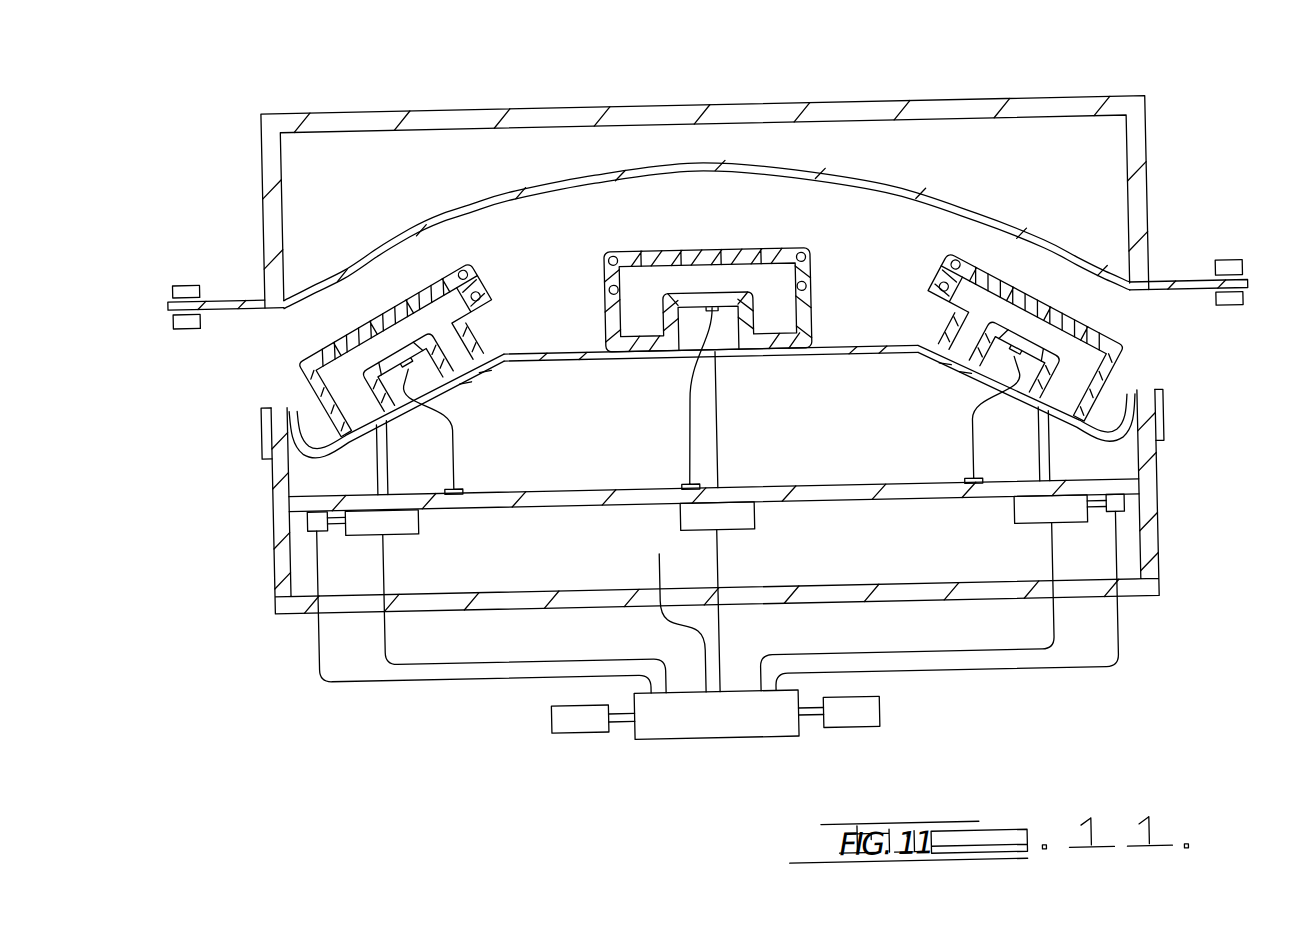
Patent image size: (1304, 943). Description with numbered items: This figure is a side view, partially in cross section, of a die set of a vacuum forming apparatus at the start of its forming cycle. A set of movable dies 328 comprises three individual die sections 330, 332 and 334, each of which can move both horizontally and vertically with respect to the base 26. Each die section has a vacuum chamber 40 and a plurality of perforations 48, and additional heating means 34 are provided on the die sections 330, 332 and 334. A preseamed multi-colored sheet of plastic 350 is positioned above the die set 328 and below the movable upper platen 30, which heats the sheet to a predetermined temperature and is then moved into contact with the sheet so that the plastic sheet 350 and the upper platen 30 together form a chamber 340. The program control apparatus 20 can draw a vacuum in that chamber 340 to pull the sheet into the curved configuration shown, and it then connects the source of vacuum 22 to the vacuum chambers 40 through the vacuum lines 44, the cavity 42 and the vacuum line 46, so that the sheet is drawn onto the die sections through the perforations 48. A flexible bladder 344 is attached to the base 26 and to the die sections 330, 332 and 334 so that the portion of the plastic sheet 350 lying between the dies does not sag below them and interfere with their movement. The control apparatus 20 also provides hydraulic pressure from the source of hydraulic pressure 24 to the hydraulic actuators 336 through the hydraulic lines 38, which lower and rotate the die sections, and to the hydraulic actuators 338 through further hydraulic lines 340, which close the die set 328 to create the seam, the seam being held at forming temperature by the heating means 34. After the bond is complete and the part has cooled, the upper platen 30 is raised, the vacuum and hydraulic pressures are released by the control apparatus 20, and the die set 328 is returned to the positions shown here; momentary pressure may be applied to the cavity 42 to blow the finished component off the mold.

The program control apparatus 20 is at (678, 728).
The source of vacuum 22 is at (866, 726).
The source of hydraulic pressure 24 is at (556, 722).
The base 26 is at (1160, 598).
The movable upper platen 30 is at (872, 108).
The heating means 34 is at (471, 265).
The hydraulic lines 38 is at (716, 560).
The vacuum chamber 40 is at (452, 356).
The cavity 42 is at (858, 572).
The vacuum lines 44 is at (458, 458).
The vacuum line 46 is at (656, 618).
The perforations 48 is at (390, 318).
The set of movable dies 328 is at (731, 225).
The die section 330 is at (300, 356).
The die section 332 is at (643, 254).
The die section 334 is at (1122, 354).
The hydraulic actuators 336 is at (418, 532).
The hydraulic actuators 338 is at (314, 520).
The chamber / hydraulic lines 340 is at (1064, 194).
The flexible bladder 344 is at (582, 358).
The preseamed multi-colored sheet of plastic 350 is at (390, 236).